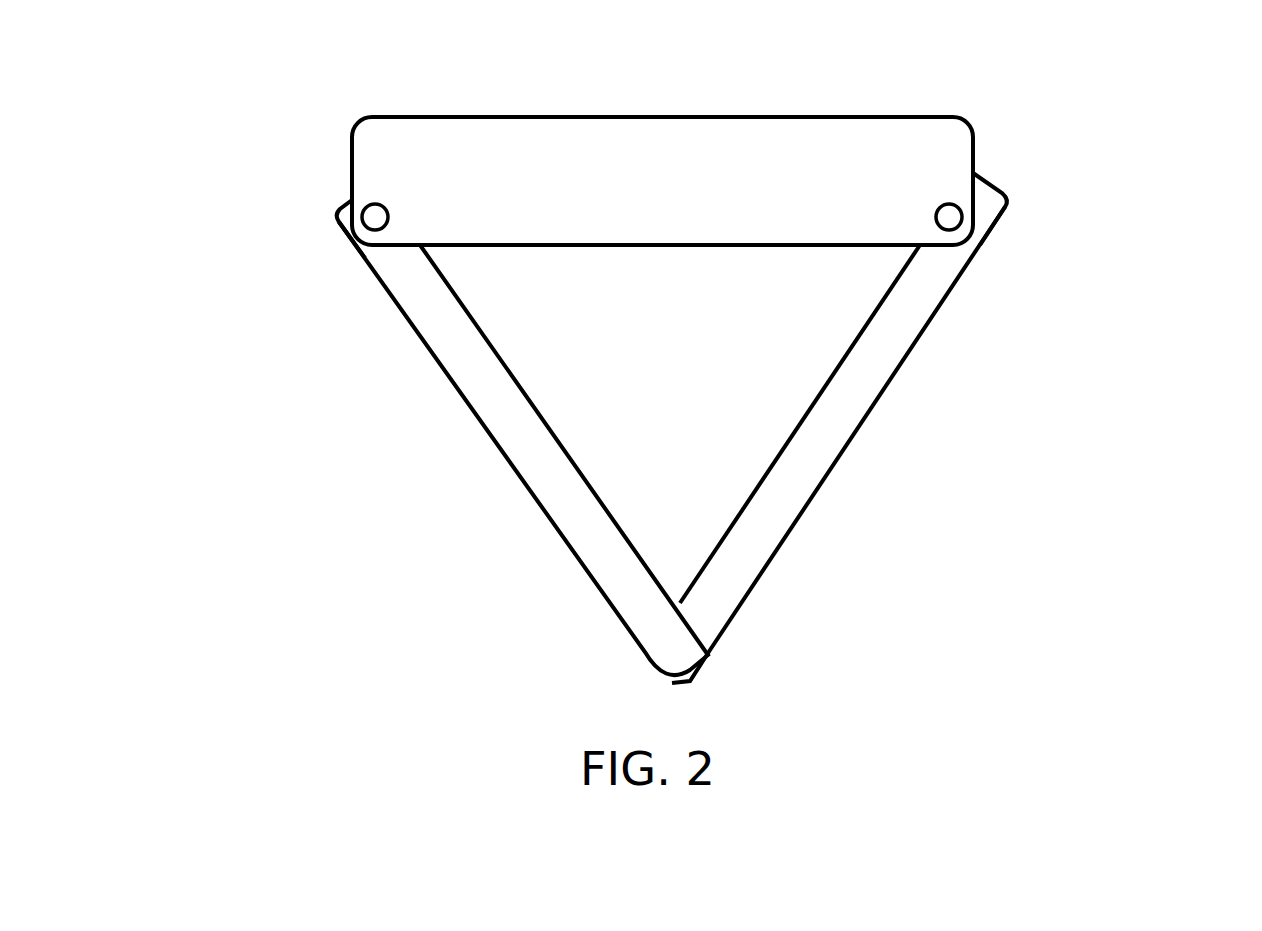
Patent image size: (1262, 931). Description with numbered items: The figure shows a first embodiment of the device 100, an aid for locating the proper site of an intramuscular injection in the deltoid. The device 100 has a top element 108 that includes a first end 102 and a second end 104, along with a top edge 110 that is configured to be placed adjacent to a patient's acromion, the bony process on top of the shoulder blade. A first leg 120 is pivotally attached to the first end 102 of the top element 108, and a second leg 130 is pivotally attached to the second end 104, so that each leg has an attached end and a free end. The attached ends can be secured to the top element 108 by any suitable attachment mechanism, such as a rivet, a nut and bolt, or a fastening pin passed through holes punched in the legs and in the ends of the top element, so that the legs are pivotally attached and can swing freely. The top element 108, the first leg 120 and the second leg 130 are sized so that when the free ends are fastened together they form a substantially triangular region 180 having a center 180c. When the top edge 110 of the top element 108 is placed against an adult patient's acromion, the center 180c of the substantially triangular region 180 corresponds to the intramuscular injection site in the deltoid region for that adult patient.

The device 100 is at (318, 386).
The first end 102 is at (977, 166).
The second end 104 is at (355, 170).
The top element 108 is at (467, 146).
The top edge 110 is at (743, 119).
The first leg 120 is at (888, 368).
The second leg 130 is at (535, 472).
The substantially triangular region 180 is at (703, 311).
The center 180c is at (669, 410).